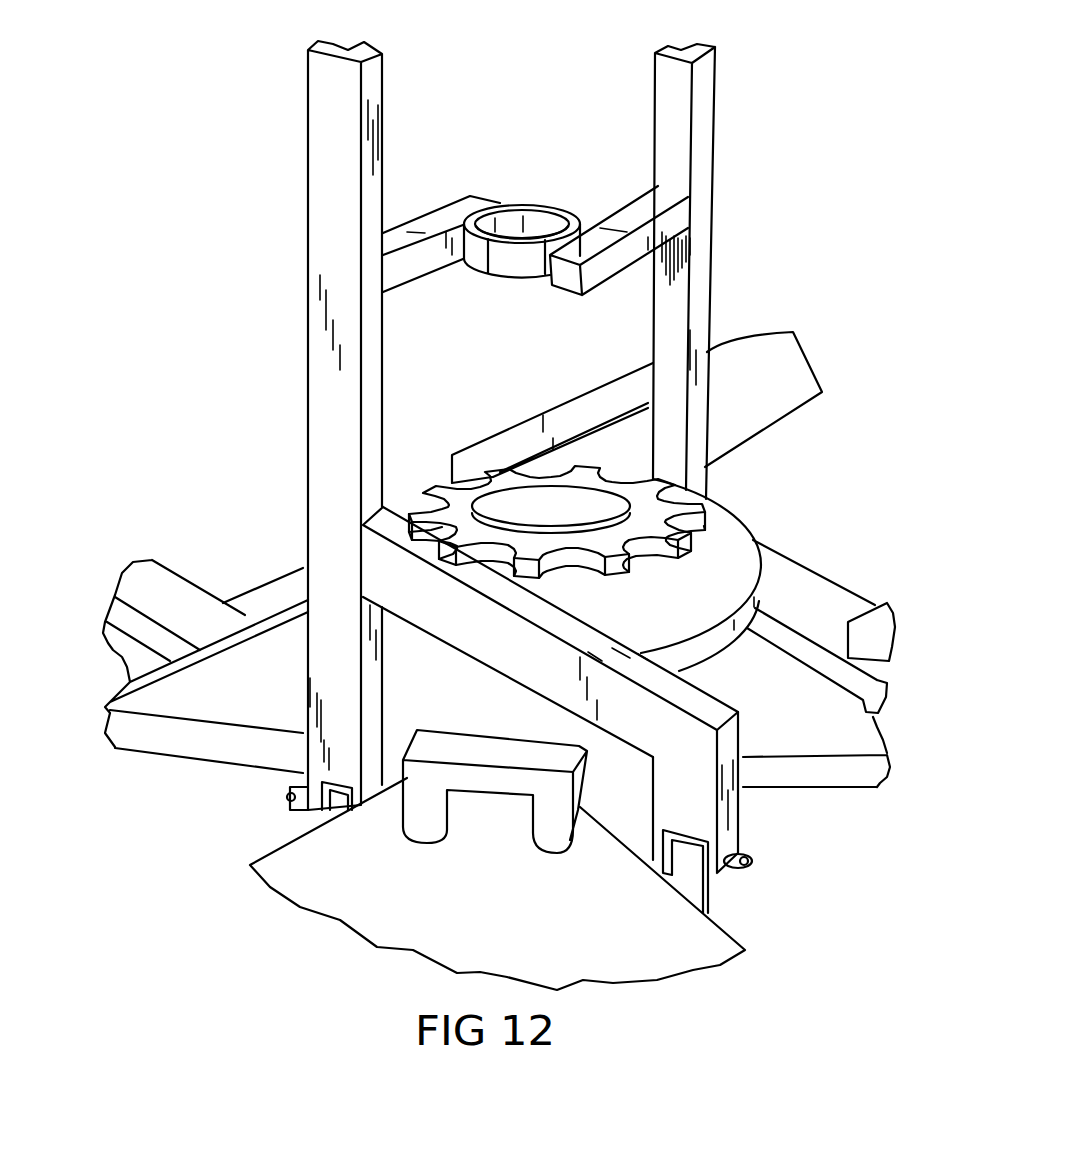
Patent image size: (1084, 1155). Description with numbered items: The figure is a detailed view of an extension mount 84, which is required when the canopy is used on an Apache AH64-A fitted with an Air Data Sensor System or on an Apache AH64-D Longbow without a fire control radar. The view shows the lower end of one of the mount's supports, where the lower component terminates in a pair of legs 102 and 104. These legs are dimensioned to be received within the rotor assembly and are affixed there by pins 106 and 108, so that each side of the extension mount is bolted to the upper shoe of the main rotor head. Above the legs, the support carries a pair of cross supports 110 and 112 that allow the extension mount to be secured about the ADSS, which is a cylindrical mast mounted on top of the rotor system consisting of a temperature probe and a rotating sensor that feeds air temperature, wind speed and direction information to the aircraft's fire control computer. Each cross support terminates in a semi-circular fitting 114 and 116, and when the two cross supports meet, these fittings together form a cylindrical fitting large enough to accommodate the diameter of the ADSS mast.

The extension mount 84 is at (518, 505).
The leg 102 is at (320, 750).
The leg 104 is at (733, 818).
The pin 106 is at (292, 805).
The pin 108 is at (757, 861).
The cross support 110 is at (438, 220).
The cross support 112 is at (560, 277).
The semi-circular fitting 114 is at (510, 203).
The semi-circular fitting 116 is at (573, 222).